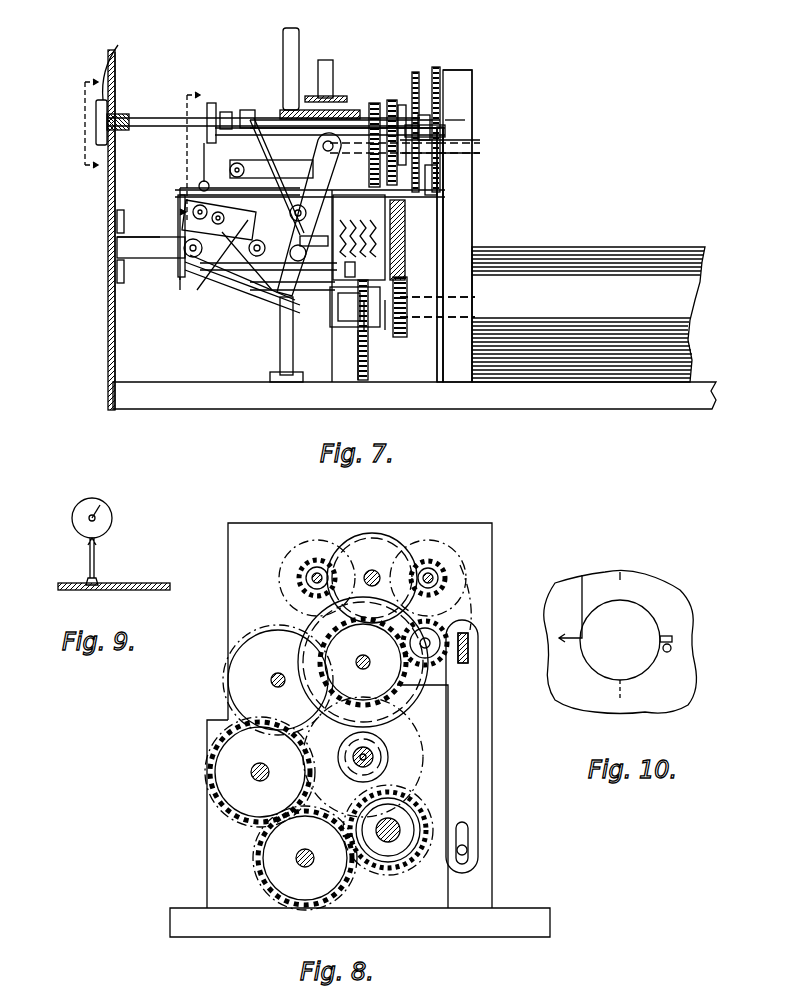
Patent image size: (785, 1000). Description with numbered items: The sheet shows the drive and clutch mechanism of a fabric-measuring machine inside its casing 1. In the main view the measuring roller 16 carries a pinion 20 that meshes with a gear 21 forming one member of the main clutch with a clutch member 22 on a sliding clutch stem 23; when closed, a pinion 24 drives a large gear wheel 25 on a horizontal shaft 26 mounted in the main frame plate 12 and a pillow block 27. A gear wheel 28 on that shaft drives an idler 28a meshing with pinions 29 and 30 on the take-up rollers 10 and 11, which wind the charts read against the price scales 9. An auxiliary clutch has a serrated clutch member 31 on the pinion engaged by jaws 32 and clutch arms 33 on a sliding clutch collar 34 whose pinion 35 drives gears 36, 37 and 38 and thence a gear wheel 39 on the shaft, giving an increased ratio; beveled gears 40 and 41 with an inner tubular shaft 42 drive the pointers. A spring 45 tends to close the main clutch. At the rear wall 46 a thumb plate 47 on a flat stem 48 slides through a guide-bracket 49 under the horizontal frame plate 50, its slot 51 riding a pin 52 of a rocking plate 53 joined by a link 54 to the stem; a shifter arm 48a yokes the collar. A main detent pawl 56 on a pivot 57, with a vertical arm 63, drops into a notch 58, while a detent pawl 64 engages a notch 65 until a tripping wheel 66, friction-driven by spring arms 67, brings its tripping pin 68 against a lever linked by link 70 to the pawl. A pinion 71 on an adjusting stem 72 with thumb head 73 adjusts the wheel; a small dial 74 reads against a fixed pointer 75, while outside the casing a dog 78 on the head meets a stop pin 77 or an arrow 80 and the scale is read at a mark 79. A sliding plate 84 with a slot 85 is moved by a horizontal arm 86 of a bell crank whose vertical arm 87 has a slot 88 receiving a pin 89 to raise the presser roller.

In FIG. 7, the casing 1 is at (116, 76).
In FIG. 10, the casing 1 is at (628, 550).
In FIG. 7, the price-rate scales 9 is at (175, 146).
In FIG. 7, the take-up roller 10 is at (82, 124).
In FIG. 8, the take-up roller 10 is at (282, 572).
In FIG. 7, the take-up roller 11 is at (388, 120).
In FIG. 8, the take-up roller 11 is at (465, 565).
In FIG. 7, the main frame plate 12 is at (465, 185).
In FIG. 8, the main frame plate 12 is at (480, 738).
In FIG. 7, the measuring roller 16 is at (588, 314).
In FIG. 7, the pinion 20 is at (400, 337).
In FIG. 7, the gear 21 is at (455, 280).
In FIG. 7, the clutch member 22 is at (405, 285).
In FIG. 7, the sliding clutch stem 23 is at (308, 255).
In FIG. 8, the sliding clutch stem 23 is at (365, 772).
In FIG. 7, the pinion 24 is at (405, 230).
In FIG. 8, the pinion 24 is at (373, 772).
In FIG. 7, the large gear wheel 25 is at (416, 72).
In FIG. 8, the large gear wheel 25 is at (373, 757).
In FIG. 7, the horizontal shaft 26 is at (480, 140).
In FIG. 8, the horizontal shaft 26 is at (354, 651).
In FIG. 7, the pillow block 27 is at (270, 140).
In FIG. 7, the gear wheel 28 is at (445, 128).
In FIG. 8, the gear wheel 28 is at (340, 640).
In FIG. 7, the idler 28a is at (443, 72).
In FIG. 8, the idler 28a is at (375, 540).
In FIG. 8, the pinion 29 is at (317, 560).
In FIG. 8, the pinion 30 is at (428, 562).
In FIG. 7, the clutch member 31 is at (385, 330).
In FIG. 7, the jaws 32 is at (366, 330).
In FIG. 7, the clutch arms 33 is at (335, 327).
In FIG. 7, the sliding clutch collar 34 is at (350, 325).
In FIG. 7, the pinion 35 is at (360, 340).
In FIG. 8, the pinion 35 is at (388, 868).
In FIG. 7, the gear 36 is at (358, 380).
In FIG. 8, the gear 36 is at (305, 858).
In FIG. 8, the gear 37 is at (260, 772).
In FIG. 8, the gear 38 is at (278, 680).
In FIG. 7, the gear wheel 39 is at (390, 100).
In FIG. 8, the gear wheel 39 is at (363, 662).
In FIG. 7, the beveled gear 40 is at (372, 103).
In FIG. 7, the beveled gear 41 is at (280, 110).
In FIG. 7, the inner tubular shaft 42 is at (326, 60).
In FIG. 7, the spring 45 is at (359, 237).
In FIG. 7, the rear wall 46 is at (108, 342).
In FIG. 10, the rear wall 46 is at (690, 698).
In FIG. 7, the thumb plate 47 is at (117, 270).
In FIG. 7, the flat stem 48 is at (152, 258).
In FIG. 7, the shifter arm 48a is at (349, 273).
In FIG. 7, the guide-bracket 49 is at (181, 290).
In FIG. 7, the horizontal frame plate 50 is at (232, 178).
In FIG. 9, the horizontal frame plate 50 is at (60, 590).
In FIG. 7, the slot 51 is at (284, 222).
In FIG. 7, the pin 52 is at (257, 256).
In FIG. 7, the rocking plate 53 is at (230, 262).
In FIG. 7, the link 54 is at (242, 287).
In FIG. 7, the main detent pawl 56 is at (185, 227).
In FIG. 7, the pivot 57 is at (240, 262).
In FIG. 7, the notch 58 is at (143, 258).
In FIG. 7, the vertical arm 63 is at (226, 116).
In FIG. 7, the detent pawl 64 is at (172, 236).
In FIG. 7, the notch 65 is at (203, 251).
In FIG. 7, the tripping wheel 66 is at (436, 67).
In FIG. 7, the spring arms 67 is at (425, 115).
In FIG. 7, the tripping pin 68 is at (400, 105).
In FIG. 7, the link 70 is at (178, 190).
In FIG. 7, the pinion 71 is at (465, 120).
In FIG. 8, the pinion 71 is at (435, 628).
In FIG. 7, the adjusting stem 72 is at (165, 119).
In FIG. 8, the adjusting stem 72 is at (430, 648).
In FIG. 9, the adjusting stem 72 is at (98, 508).
In FIG. 7, the thumb head 73 is at (96, 128).
In FIG. 10, the thumb head 73 is at (645, 608).
In FIG. 7, the small dial 74 is at (211, 103).
In FIG. 9, the small dial 74 is at (112, 518).
In FIG. 7, the fixed pointer 75 is at (204, 160).
In FIG. 9, the fixed pointer 75 is at (95, 565).
In FIG. 10, the stop pin 77 is at (673, 652).
In FIG. 7, the dog 78 is at (119, 59).
In FIG. 10, the dog 78 is at (672, 638).
In FIG. 10, the mark 79 is at (625, 702).
In FIG. 10, the arrow 80 is at (571, 595).
In FIG. 7, the sliding plate 84 is at (443, 210).
In FIG. 8, the sliding plate 84 is at (470, 815).
In FIG. 8, the slot 85 is at (470, 645).
In FIG. 7, the horizontal arm 86 is at (437, 180).
In FIG. 8, the horizontal arm 86 is at (468, 655).
In FIG. 7, the vertical arm 87 is at (314, 234).
In FIG. 7, the slot 88 is at (270, 290).
In FIG. 7, the pin 89 is at (280, 300).